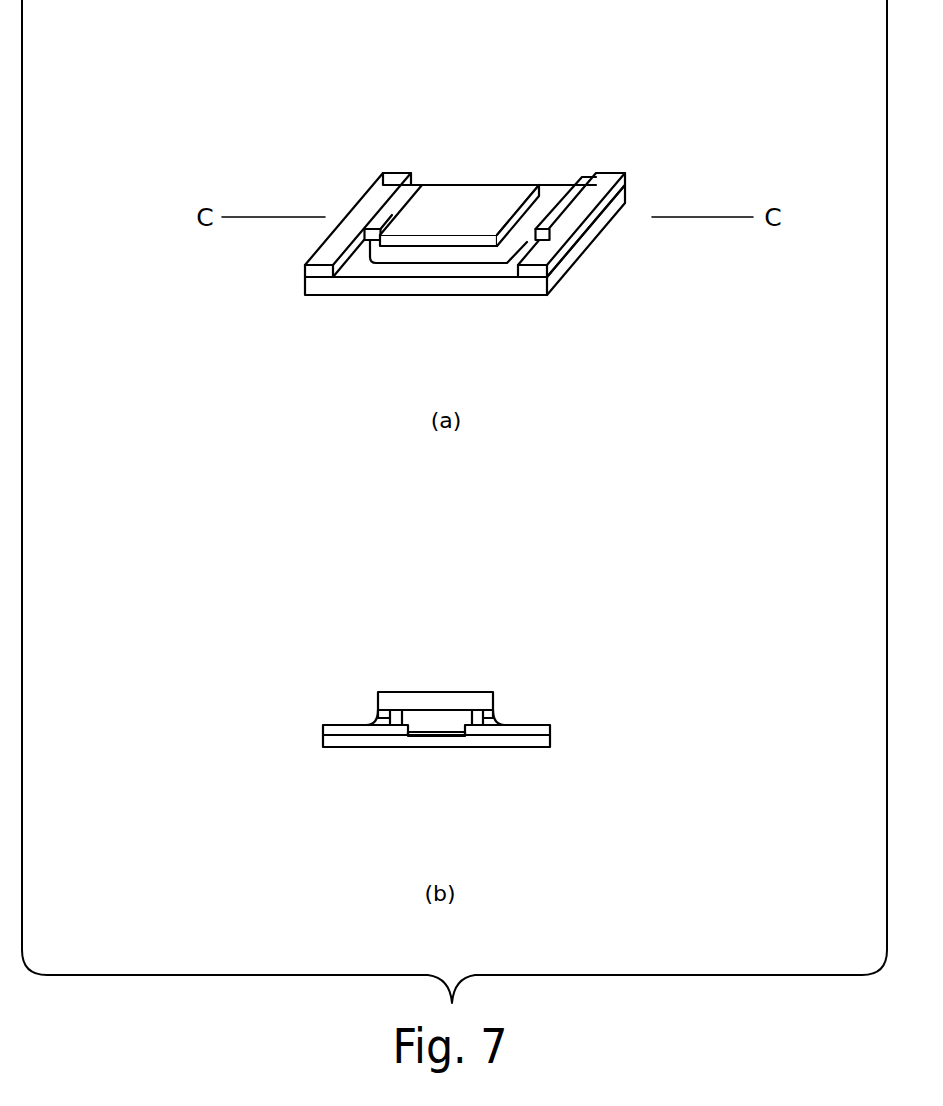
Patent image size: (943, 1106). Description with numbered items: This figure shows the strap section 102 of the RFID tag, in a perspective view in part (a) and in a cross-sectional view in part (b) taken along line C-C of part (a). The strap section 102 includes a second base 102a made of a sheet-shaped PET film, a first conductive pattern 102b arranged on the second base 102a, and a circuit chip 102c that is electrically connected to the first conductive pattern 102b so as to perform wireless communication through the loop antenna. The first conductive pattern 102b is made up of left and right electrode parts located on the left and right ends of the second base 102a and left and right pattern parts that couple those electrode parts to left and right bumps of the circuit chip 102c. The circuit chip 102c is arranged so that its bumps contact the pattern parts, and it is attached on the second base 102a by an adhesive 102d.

The strap section 102 is at (700, 157).
The second base 102a is at (320, 286).
The first conductive pattern 102b is at (688, 72).
The circuit chip 102c is at (450, 213).
The adhesive 102d is at (473, 257).